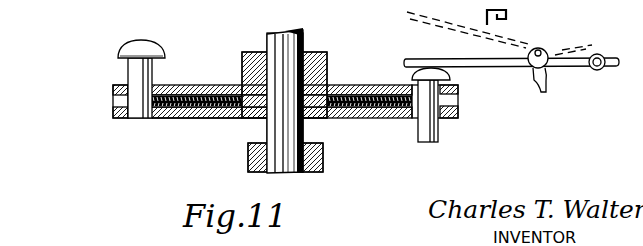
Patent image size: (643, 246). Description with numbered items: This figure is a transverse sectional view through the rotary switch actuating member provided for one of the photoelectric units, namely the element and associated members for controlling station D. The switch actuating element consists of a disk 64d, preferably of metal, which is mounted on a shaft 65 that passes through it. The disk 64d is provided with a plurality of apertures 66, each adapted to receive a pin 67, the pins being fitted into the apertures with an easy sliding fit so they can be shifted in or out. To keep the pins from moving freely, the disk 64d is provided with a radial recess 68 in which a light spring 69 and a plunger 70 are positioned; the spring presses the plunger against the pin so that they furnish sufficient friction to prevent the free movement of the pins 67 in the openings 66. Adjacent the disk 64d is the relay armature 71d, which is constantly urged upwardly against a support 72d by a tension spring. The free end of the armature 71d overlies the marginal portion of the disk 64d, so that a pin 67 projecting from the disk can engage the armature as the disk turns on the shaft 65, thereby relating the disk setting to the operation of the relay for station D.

The disk 64d is at (350, 119).
The shaft 65 is at (305, 37).
The aperture 66 is at (148, 80).
The pin 67 is at (135, 65).
The radial recess 68 is at (118, 102).
The light spring 69 is at (197, 118).
The plunger 70 is at (156, 119).
The armature 71d is at (492, 68).
The support 72d is at (508, 18).